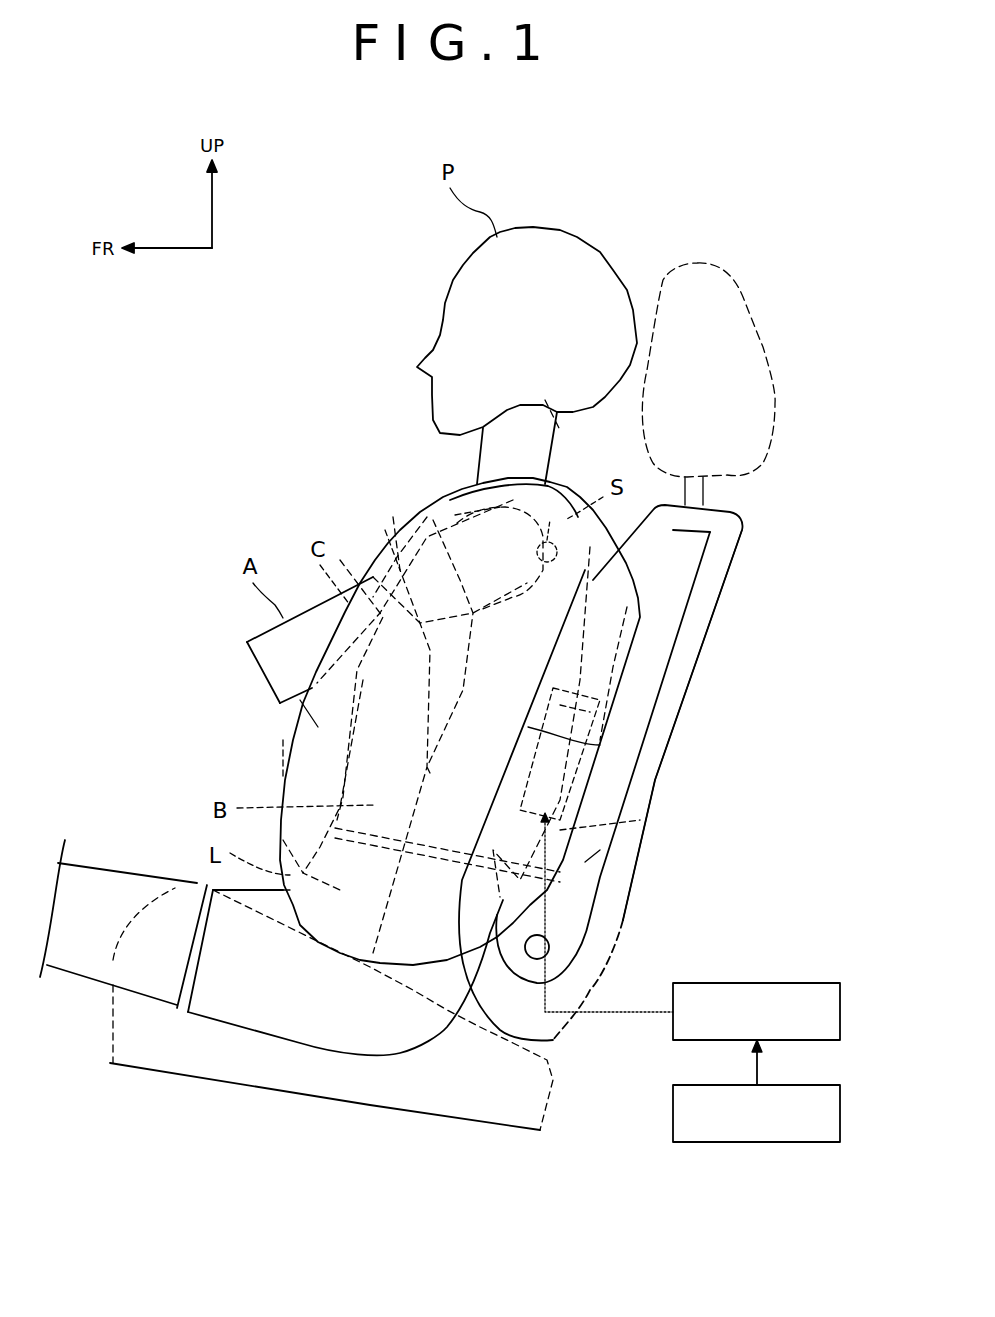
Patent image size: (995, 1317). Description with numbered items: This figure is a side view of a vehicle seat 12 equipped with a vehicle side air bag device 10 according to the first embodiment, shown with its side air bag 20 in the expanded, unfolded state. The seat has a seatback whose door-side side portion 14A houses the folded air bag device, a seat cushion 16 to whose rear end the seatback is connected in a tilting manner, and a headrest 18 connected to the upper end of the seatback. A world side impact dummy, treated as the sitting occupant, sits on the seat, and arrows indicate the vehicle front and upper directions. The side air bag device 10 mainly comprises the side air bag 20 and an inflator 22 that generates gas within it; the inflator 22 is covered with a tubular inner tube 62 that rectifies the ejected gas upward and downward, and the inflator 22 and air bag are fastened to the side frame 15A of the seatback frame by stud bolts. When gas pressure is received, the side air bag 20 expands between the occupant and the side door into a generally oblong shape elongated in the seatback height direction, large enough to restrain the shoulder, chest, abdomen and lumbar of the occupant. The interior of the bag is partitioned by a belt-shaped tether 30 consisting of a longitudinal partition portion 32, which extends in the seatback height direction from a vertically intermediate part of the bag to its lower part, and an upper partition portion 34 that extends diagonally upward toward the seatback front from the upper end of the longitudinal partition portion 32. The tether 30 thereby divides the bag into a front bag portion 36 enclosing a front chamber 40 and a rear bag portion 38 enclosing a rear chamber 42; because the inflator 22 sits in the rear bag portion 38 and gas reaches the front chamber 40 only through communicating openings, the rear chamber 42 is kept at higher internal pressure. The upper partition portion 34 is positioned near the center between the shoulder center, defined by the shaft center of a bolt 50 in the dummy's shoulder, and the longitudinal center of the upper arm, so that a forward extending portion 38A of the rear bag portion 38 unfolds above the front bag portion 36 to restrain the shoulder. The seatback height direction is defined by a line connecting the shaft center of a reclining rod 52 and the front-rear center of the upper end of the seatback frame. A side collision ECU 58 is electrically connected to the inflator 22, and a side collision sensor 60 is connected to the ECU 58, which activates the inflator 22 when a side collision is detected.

The vehicle side air bag device 10 is at (320, 500).
The vehicle seat 12 is at (754, 262).
The door-side side portion 14A is at (730, 608).
The side frame 15A is at (585, 862).
The seat cushion 16 is at (253, 1093).
The headrest 18 is at (762, 340).
The side air bag 20 is at (638, 645).
The inflator 22 is at (640, 820).
The tether 30 is at (460, 690).
The longitudinal partition portion 32 is at (430, 773).
The upper partition portion 34 is at (385, 530).
The front bag portion 36 is at (318, 727).
The rear bag portion 38 is at (528, 727).
The forward extending portion 38A is at (455, 515).
The front chamber 40 is at (312, 757).
The rear chamber 42 is at (585, 785).
The bolt 50 is at (548, 530).
The reclining rod 52 is at (549, 945).
The side collision ECU 58 is at (673, 1015).
The side collision sensor 60 is at (673, 1120).
The inner tube 62 is at (660, 730).